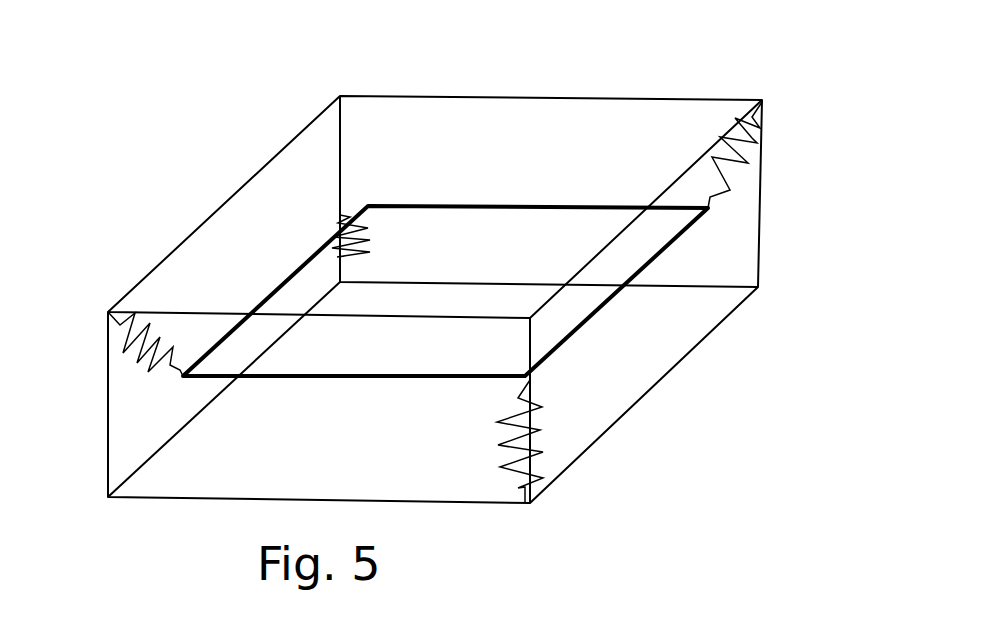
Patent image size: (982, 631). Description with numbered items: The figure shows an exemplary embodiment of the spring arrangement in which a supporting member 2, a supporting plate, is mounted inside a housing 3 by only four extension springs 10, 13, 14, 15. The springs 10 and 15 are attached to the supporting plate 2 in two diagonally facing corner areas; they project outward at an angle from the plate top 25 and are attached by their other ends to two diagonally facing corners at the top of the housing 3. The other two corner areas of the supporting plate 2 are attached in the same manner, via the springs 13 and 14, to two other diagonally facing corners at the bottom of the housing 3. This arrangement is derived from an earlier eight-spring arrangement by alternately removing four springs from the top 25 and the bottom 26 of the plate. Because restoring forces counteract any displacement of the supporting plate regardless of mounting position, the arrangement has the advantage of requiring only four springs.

The supporting member 2 is at (612, 268).
The housing 3 is at (577, 96).
The extension spring 10 is at (117, 338).
The extension spring 13 is at (530, 445).
The extension spring 14 is at (328, 287).
The extension spring 15 is at (762, 126).
The plate top 25 is at (453, 240).
The bottom 26 is at (408, 383).